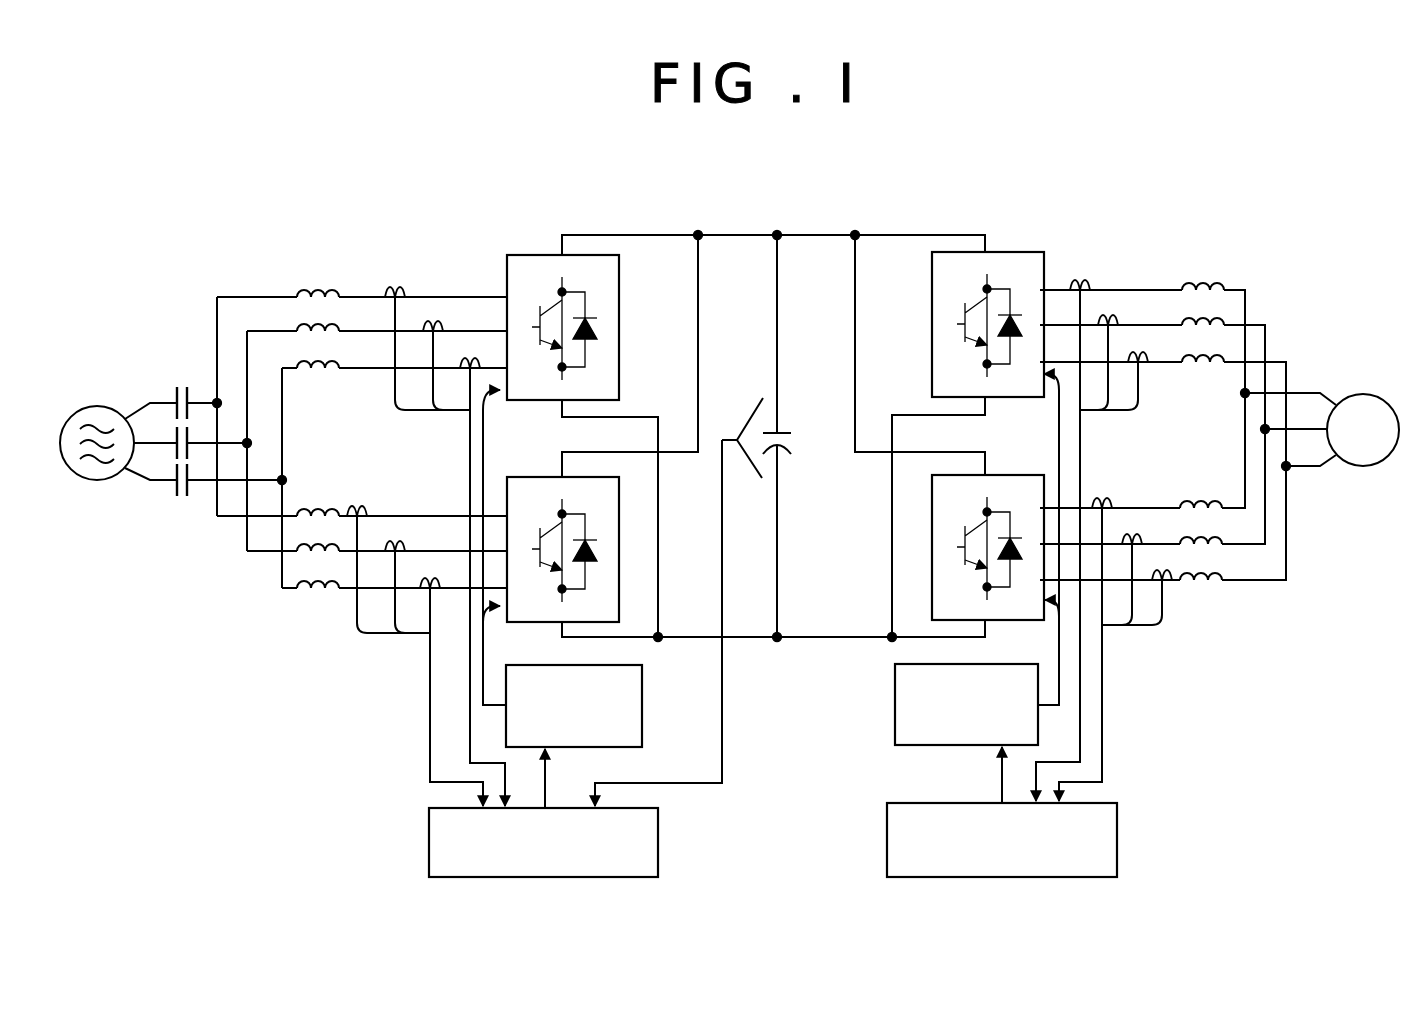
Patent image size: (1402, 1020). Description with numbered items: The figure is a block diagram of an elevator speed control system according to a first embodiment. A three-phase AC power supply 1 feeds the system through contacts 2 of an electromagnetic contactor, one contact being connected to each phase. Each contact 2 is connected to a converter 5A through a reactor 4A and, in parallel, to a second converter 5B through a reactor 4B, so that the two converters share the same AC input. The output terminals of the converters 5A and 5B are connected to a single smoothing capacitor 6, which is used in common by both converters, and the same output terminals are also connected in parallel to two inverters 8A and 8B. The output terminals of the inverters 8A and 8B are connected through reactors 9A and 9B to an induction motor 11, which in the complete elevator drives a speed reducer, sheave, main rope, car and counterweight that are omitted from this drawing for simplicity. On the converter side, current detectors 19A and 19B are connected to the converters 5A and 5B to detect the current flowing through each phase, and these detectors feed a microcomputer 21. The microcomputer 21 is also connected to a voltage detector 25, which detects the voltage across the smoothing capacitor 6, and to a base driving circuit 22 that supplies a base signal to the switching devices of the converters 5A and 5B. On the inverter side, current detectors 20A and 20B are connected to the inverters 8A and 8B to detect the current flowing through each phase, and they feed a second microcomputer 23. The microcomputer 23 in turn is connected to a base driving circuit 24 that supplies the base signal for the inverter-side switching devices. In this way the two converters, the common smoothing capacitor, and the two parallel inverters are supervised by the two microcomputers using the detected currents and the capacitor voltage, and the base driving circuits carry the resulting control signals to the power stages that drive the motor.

The three-phase AC power supply 1 is at (116, 406).
The contacts 2 is at (186, 386).
The reactor 4A is at (331, 295).
The reactor 4B is at (320, 513).
The converter 5A is at (522, 254).
The converter 5B is at (524, 476).
The smoothing capacitor 6 is at (798, 436).
The inverter 8A is at (1036, 251).
The inverter 8B is at (1001, 474).
The reactor 9A is at (1200, 287).
The reactor 9B is at (1192, 506).
The induction motor 11 is at (1359, 394).
The current detector 19A is at (402, 293).
The current detector 19B is at (367, 510).
The current detector 20A is at (1088, 287).
The current detector 20B is at (1105, 505).
The microcomputer 21 is at (660, 846).
The base driving circuit 22 is at (644, 716).
The microcomputer 23 is at (1118, 847).
The base driving circuit 24 is at (894, 704).
The voltage detector 25 is at (751, 418).